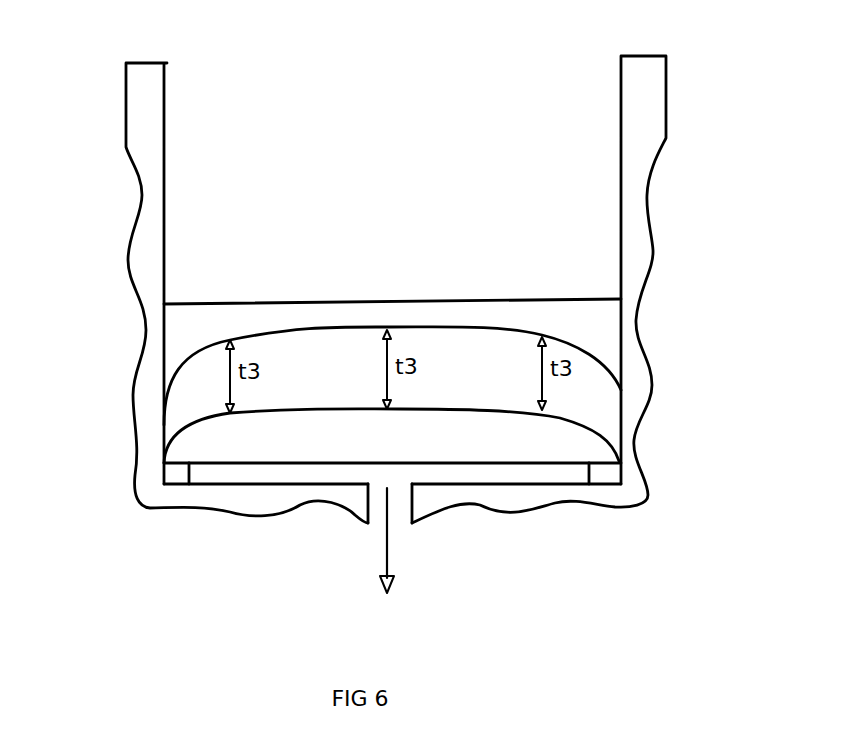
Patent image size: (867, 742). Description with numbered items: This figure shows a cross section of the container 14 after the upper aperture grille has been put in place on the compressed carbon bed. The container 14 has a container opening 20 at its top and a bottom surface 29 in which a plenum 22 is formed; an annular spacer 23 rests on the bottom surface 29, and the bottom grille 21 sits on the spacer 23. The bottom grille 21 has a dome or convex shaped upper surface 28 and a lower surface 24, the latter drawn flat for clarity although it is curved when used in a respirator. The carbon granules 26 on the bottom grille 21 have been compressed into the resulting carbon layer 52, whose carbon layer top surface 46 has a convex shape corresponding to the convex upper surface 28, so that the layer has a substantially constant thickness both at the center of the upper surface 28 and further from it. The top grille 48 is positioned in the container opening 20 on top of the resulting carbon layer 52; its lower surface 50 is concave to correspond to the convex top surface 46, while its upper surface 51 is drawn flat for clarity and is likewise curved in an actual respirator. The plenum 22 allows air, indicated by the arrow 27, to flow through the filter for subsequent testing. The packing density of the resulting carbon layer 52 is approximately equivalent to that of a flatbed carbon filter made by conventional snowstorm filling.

The container 14 is at (640, 100).
The container opening 20 is at (190, 98).
The bottom grille 21 is at (193, 449).
The plenum 22 is at (380, 499).
The annular spacer 23 is at (603, 478).
The lower surface 24 is at (580, 482).
The carbon granules 26 is at (607, 383).
The arrow 27 is at (383, 550).
The upper surface 28 is at (607, 433).
The bottom surface 29 is at (275, 487).
The carbon layer top surface 46 is at (512, 327).
The top grille 48 is at (196, 322).
The lower surface 50 is at (293, 333).
The upper surface 51 is at (423, 300).
The resulting carbon layer 52 is at (177, 394).